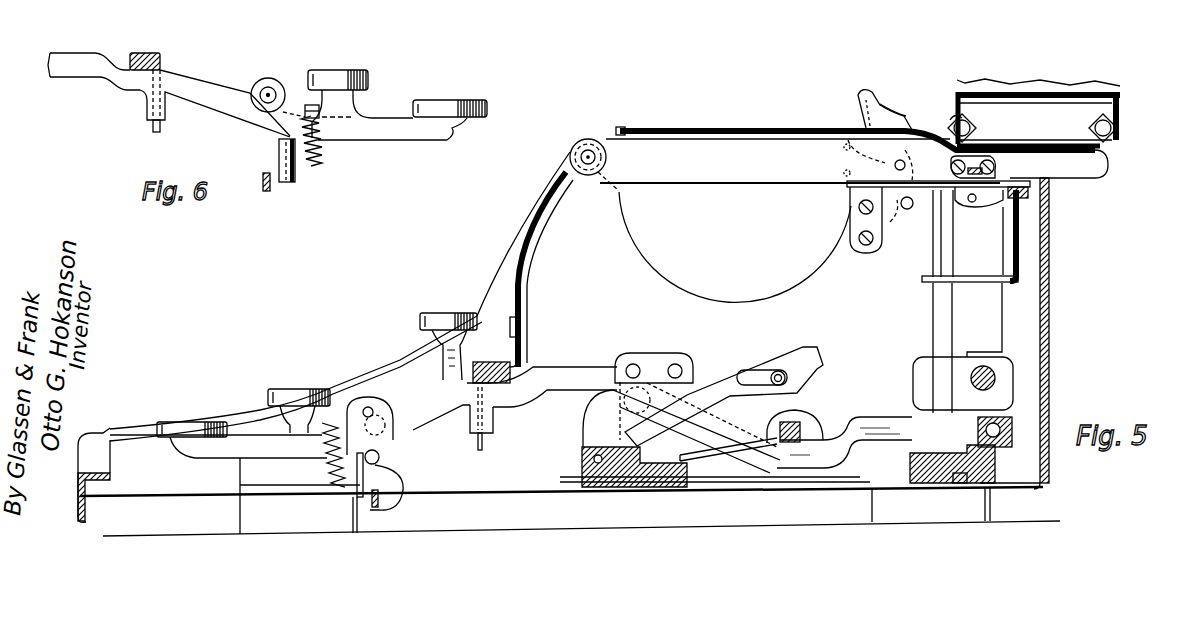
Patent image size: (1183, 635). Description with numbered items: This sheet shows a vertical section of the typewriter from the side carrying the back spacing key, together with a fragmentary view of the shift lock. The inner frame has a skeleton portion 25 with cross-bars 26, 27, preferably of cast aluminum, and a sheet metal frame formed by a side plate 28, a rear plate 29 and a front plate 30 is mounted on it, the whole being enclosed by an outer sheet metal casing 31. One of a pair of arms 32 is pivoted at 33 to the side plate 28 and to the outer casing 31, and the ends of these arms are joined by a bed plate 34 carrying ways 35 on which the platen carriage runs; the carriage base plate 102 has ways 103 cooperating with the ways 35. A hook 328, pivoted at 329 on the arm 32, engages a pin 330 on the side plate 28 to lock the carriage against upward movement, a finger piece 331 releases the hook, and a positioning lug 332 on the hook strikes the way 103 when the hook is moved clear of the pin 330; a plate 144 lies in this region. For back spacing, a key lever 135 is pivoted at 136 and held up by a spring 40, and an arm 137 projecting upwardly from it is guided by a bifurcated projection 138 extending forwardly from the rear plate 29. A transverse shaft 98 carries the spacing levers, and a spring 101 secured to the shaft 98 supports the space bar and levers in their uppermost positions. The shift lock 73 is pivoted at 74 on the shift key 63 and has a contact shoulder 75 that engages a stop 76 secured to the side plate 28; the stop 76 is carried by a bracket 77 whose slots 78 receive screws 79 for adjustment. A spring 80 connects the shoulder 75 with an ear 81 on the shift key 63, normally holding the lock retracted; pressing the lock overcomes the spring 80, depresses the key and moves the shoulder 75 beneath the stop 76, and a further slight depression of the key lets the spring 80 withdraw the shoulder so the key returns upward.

In FIG. 5, the skeleton portion 25 is at (758, 481).
In FIG. 5, the cross-bar 26 is at (641, 489).
In FIG. 5, the cross-bar 27 is at (962, 486).
In FIG. 5, the side plate 28 is at (712, 300).
In FIG. 5, the rear plate 29 is at (1022, 246).
In FIG. 5, the front plate 30 is at (530, 296).
In FIG. 5, the outer sheet metal casing 31 is at (118, 432).
In FIG. 5, the arm 32 is at (720, 150).
In FIG. 5, the pivot 33 is at (588, 149).
In FIG. 5, the bed plate 34 is at (1067, 150).
In FIG. 5, the ways 35 is at (975, 124).
In FIG. 5, the spring 40 is at (908, 450).
In FIG. 6, the shift key 63 is at (205, 90).
In FIG. 5, the shift key 63 is at (466, 404).
In FIG. 6, the shift lock 73 is at (342, 80).
In FIG. 6, the pivot 74 is at (267, 85).
In FIG. 5, the pivot 74 is at (368, 406).
In FIG. 6, the contact shoulder 75 is at (276, 134).
In FIG. 5, the contact shoulder 75 is at (400, 490).
In FIG. 6, the stop 76 is at (271, 189).
In FIG. 5, the stop 76 is at (396, 503).
In FIG. 5, the bracket 77 is at (380, 458).
In FIG. 5, the slot 78 is at (365, 478).
In FIG. 5, the screw 79 is at (395, 433).
In FIG. 6, the spring 80 is at (325, 154).
In FIG. 6, the ear 81 is at (307, 105).
In FIG. 5, the shaft 98 is at (805, 428).
In FIG. 5, the spring 101 is at (698, 463).
In FIG. 5, the base plate 102 is at (1030, 98).
In FIG. 5, the ways 103 is at (955, 124).
In FIG. 5, the key lever 135 is at (860, 418).
In FIG. 5, the pivot 136 is at (1005, 412).
In FIG. 5, the arm 137 is at (946, 314).
In FIG. 5, the bifurcated projection 138 is at (967, 280).
In FIG. 5, the plate 144 is at (1033, 188).
In FIG. 5, the hook 328 is at (893, 236).
In FIG. 5, the pivot 329 is at (850, 190).
In FIG. 5, the pin 330 is at (910, 211).
In FIG. 5, the finger piece 331 is at (858, 97).
In FIG. 5, the positioning lug 332 is at (916, 110).